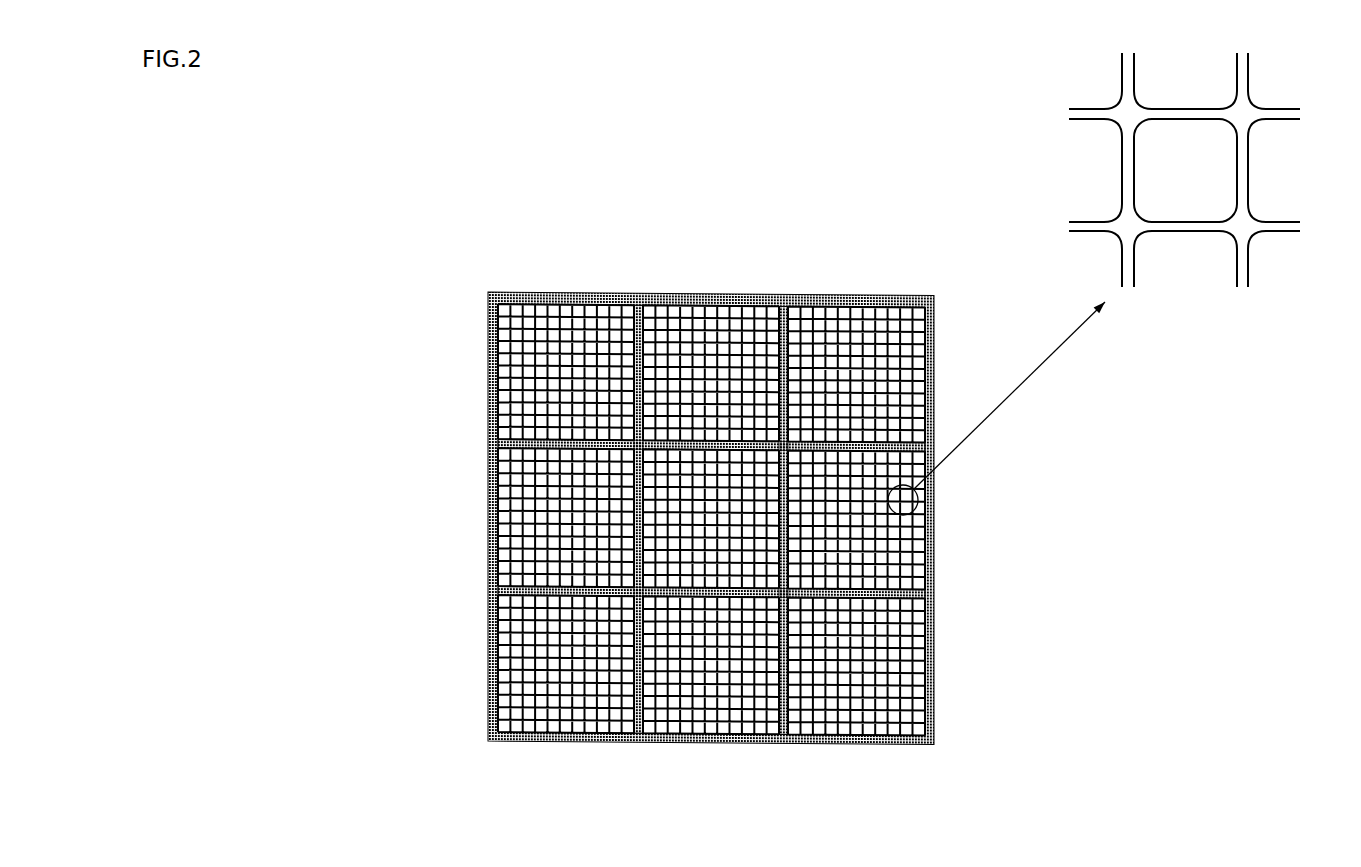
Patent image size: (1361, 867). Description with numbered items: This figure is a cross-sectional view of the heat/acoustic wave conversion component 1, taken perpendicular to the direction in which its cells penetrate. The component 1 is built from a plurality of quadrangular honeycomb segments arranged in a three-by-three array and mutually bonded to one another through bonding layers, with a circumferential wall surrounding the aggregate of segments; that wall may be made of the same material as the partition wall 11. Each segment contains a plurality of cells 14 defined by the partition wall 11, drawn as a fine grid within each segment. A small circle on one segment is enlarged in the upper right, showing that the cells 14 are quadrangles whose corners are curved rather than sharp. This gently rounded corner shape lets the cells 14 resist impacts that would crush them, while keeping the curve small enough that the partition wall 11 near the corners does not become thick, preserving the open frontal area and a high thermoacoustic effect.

The heat/acoustic wave conversion component 1 is at (806, 194).
The partition wall 11 is at (1177, 117).
The cell 14 is at (1215, 140).